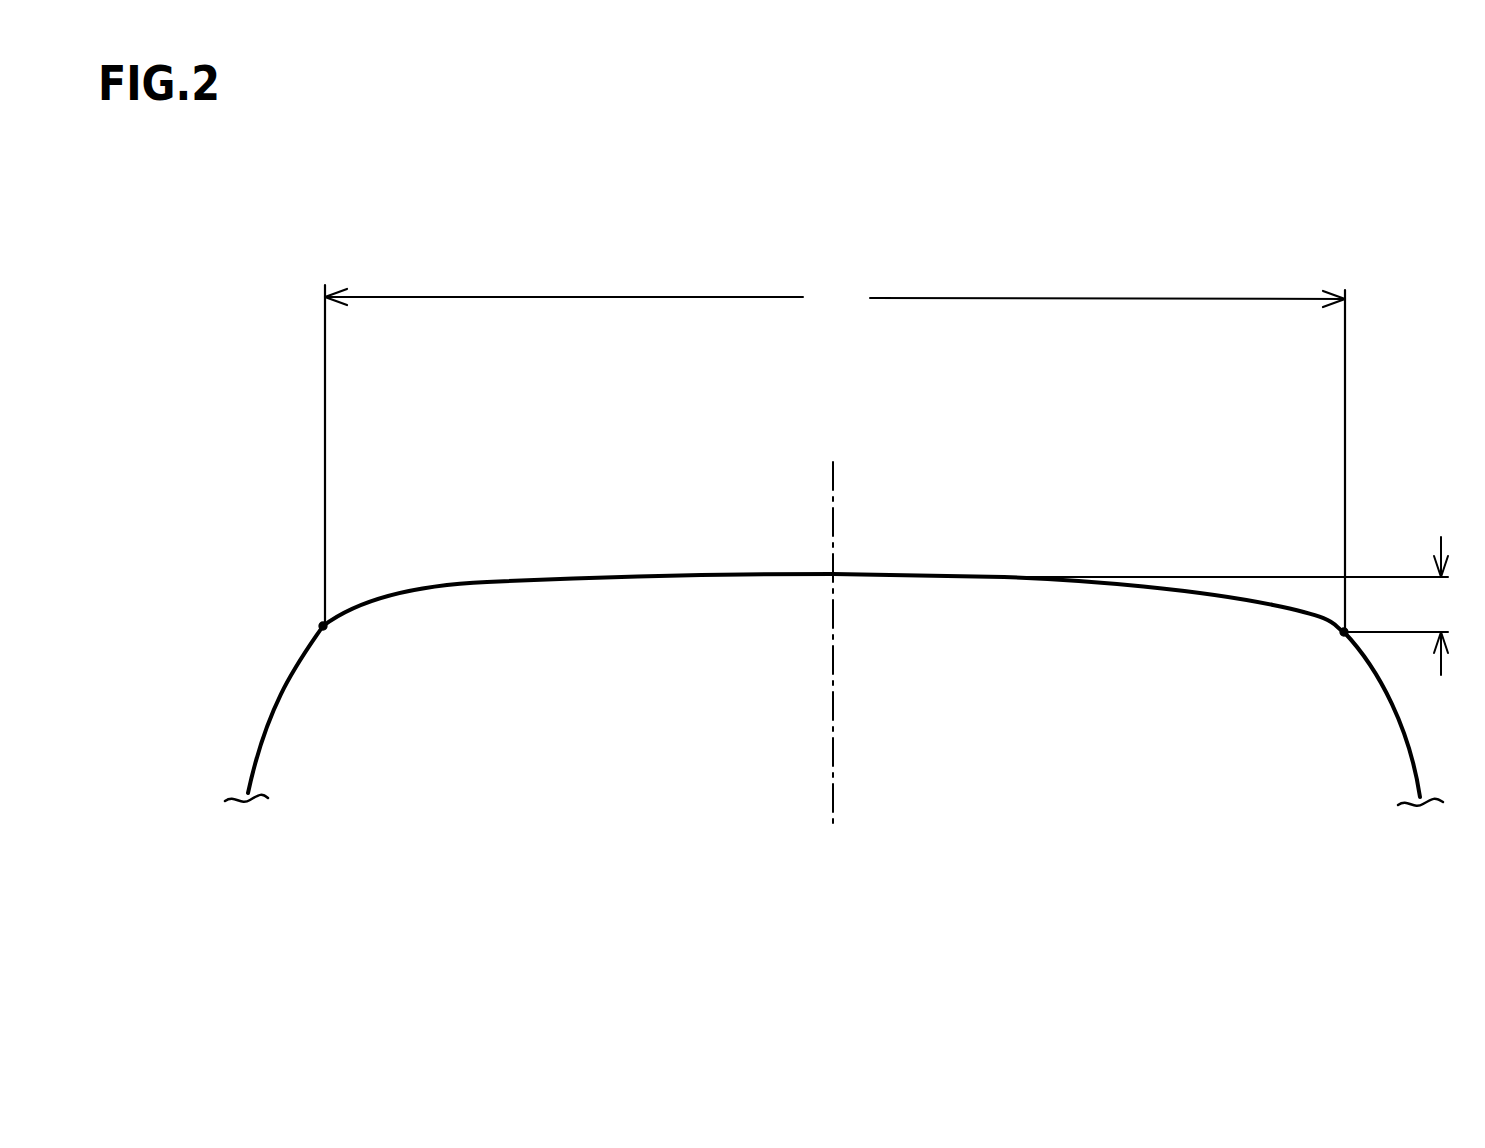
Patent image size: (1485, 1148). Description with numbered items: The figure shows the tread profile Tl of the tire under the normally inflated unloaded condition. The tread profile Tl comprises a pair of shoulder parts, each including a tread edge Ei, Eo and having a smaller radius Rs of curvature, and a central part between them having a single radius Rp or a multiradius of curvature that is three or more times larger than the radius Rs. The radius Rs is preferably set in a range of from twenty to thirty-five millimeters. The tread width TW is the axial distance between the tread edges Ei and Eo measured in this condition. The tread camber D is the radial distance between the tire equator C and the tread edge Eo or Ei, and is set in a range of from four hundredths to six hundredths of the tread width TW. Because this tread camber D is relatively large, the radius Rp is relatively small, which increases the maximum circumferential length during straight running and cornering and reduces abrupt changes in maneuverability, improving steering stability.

The tread width TW is at (835, 454).
The tread profile Tl is at (1122, 583).
The tire equator C is at (835, 623).
The tread edge Ei is at (323, 625).
The tread edge Eo is at (1344, 634).
The radius of curvature of central part Rp is at (671, 707).
The radius of curvature of shoulder part Rs is at (1318, 621).
The tread camber D is at (1458, 606).